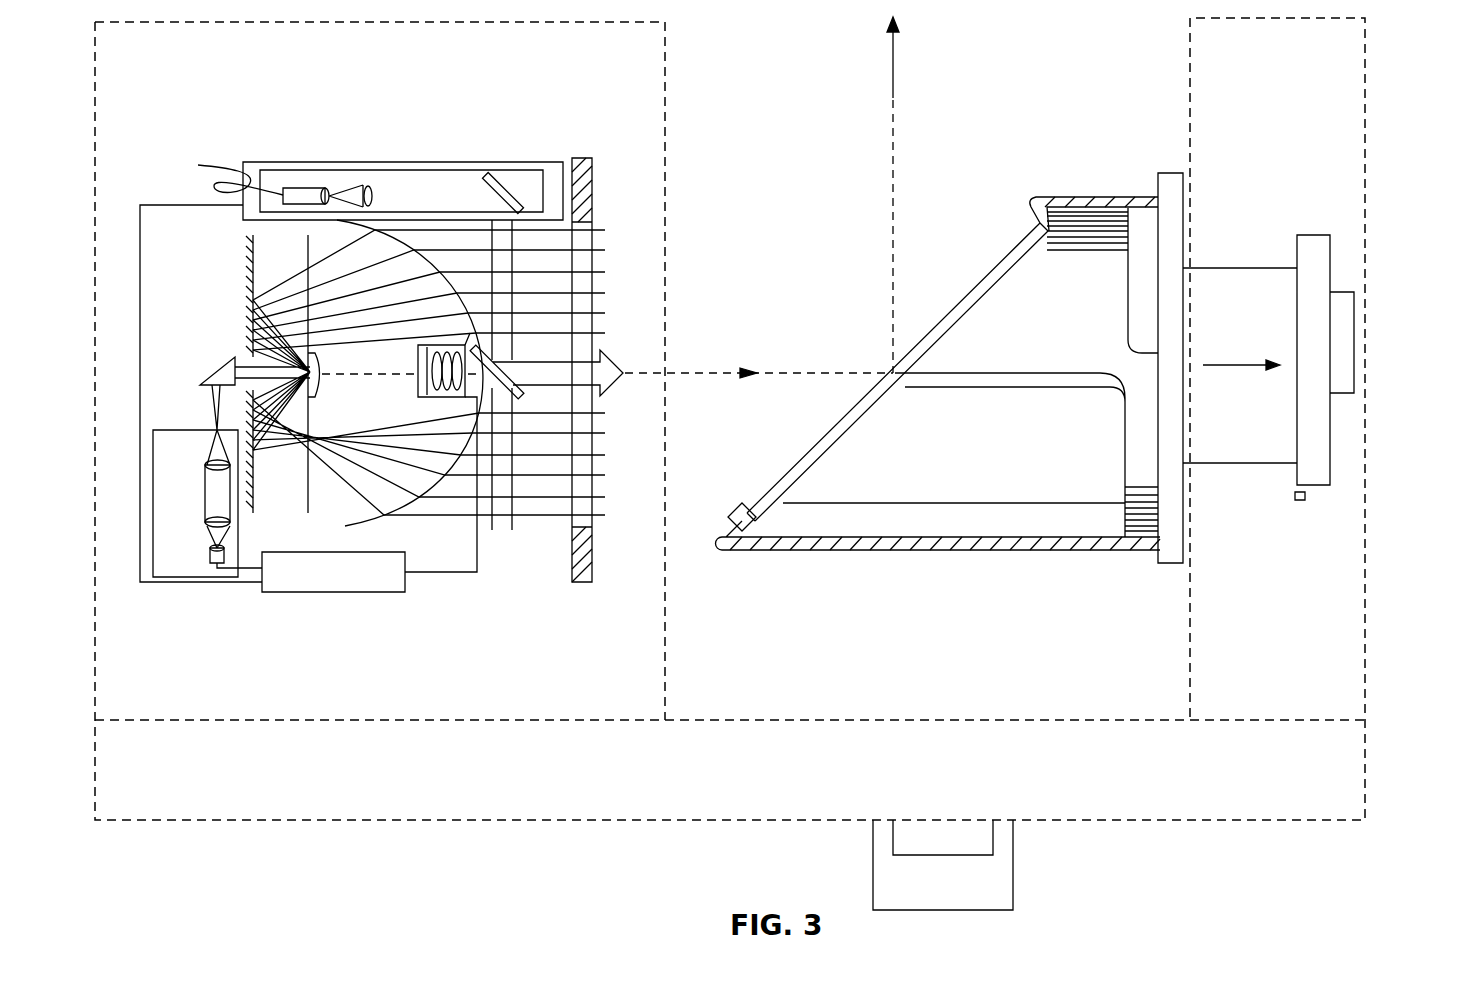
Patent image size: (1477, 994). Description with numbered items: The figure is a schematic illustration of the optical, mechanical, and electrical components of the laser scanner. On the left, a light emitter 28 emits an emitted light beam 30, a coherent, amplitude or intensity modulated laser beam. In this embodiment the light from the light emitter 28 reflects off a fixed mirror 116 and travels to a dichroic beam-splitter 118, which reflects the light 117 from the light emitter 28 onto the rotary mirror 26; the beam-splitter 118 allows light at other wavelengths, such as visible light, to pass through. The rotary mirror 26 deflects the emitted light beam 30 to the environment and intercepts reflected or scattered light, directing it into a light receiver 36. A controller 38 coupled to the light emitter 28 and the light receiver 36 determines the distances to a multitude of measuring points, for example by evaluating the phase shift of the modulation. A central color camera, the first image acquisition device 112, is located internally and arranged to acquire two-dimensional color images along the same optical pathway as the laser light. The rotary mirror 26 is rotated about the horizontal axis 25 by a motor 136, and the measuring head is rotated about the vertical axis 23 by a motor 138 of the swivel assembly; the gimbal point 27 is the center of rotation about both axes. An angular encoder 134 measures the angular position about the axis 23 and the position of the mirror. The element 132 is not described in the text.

The vertical axis 23 is at (897, 70).
The horizontal axis 25 is at (1235, 365).
The rotary mirror 26 is at (1018, 241).
The gimbal point 27 is at (887, 372).
The light emitter 28 is at (312, 188).
The emitted light beam 30 is at (724, 373).
The light receiver 36 is at (190, 508).
The controller 38 is at (337, 593).
The first image acquisition device 112 is at (440, 400).
The fixed mirror 116 is at (512, 188).
The light 117 is at (500, 285).
The dichroic beam-splitter 118 is at (500, 392).
The connector 132 is at (993, 838).
The angular encoder 134 is at (1354, 335).
The motor 136 is at (1316, 487).
The motor 138 is at (1013, 880).